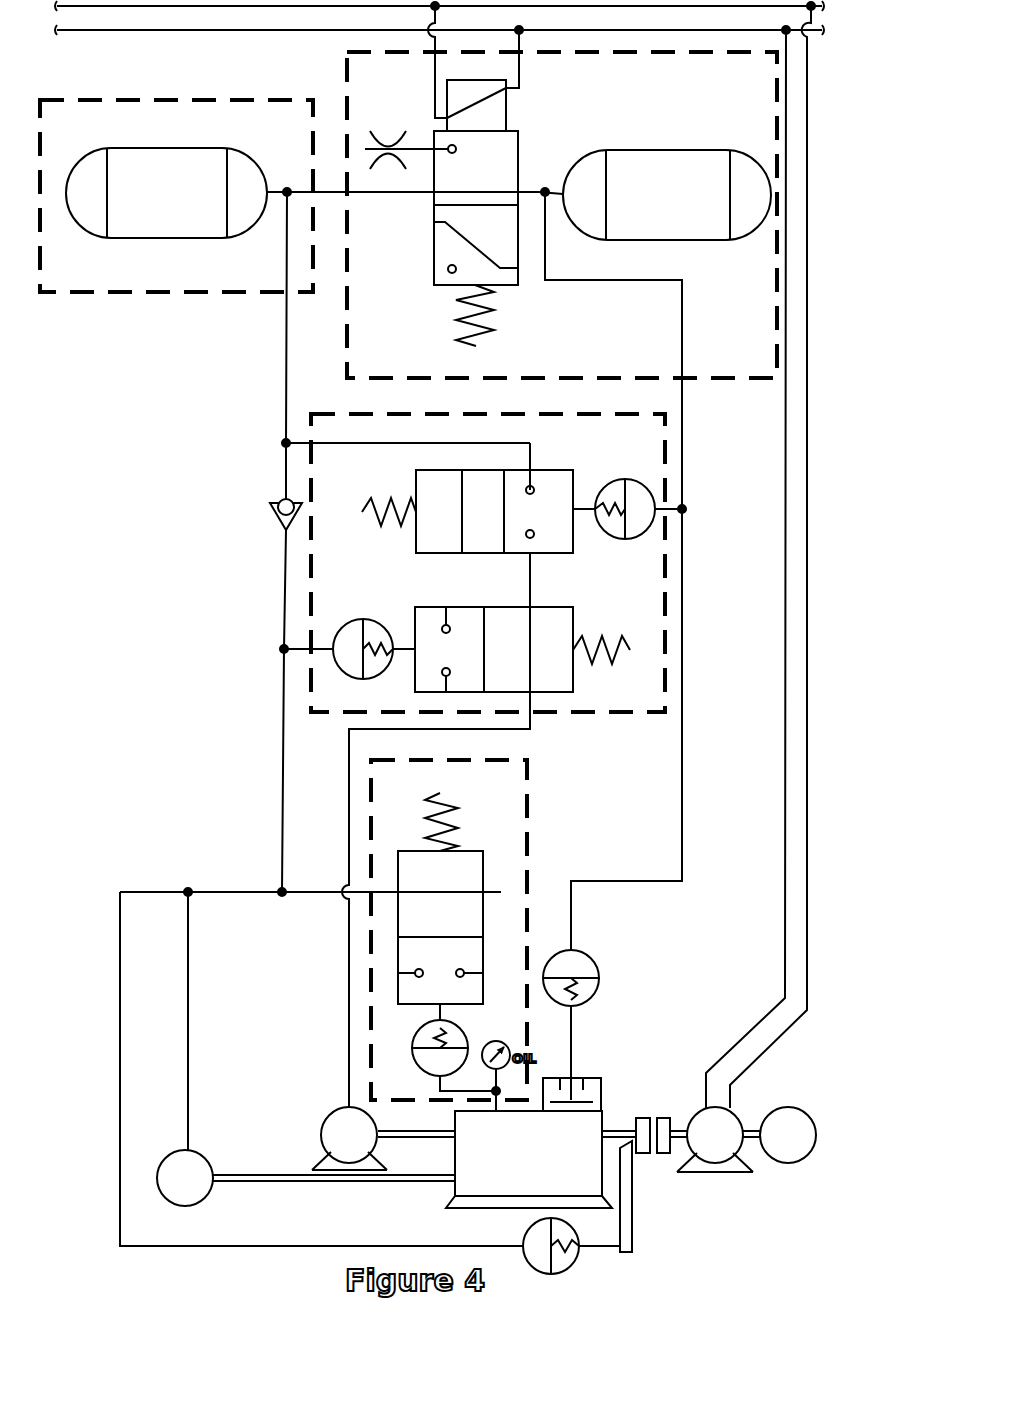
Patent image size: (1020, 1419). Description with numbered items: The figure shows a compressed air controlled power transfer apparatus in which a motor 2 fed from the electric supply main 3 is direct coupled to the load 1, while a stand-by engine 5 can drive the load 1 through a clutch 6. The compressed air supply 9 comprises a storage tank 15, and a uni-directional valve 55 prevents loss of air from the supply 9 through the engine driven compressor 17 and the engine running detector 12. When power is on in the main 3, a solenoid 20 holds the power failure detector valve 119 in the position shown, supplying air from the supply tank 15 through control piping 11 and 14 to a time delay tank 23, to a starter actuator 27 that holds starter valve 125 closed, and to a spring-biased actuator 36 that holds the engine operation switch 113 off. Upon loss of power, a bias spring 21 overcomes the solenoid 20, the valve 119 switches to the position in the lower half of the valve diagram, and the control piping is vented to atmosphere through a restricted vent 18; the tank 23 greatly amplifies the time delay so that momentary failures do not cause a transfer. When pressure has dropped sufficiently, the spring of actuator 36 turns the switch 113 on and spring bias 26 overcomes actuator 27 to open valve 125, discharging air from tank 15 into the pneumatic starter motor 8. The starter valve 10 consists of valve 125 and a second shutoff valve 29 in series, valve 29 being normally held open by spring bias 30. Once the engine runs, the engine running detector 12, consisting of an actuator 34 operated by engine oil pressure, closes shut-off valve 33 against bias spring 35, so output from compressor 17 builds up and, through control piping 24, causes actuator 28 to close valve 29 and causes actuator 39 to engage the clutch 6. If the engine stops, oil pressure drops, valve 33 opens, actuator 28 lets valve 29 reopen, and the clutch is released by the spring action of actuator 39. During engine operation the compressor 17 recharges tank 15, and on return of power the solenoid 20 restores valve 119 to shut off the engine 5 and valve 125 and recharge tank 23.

The load 1 is at (795, 1109).
The motor 2 is at (735, 1112).
The electric supply main 3 is at (648, 6).
The stand-by engine 5 is at (452, 1193).
The clutch 6 is at (650, 1117).
The pneumatic starter motor 8 is at (328, 1111).
The compressed air supply 9 is at (178, 100).
The starter valve 10 is at (512, 413).
The control piping 11 is at (667, 519).
The engine running detector 12 is at (530, 764).
The control piping 14 is at (686, 478).
The storage tank 15 is at (172, 148).
The engine driven compressor 17 is at (208, 1194).
The restricted vent 18 is at (386, 137).
The solenoid 20 is at (508, 108).
The bias spring 21 is at (458, 312).
The time delay tank 23 is at (655, 151).
The control piping 24 is at (320, 645).
The spring bias 26 is at (385, 498).
The actuator 27 is at (620, 480).
The actuator 28 is at (376, 678).
The shutoff valve 29 is at (556, 607).
The spring bias 30 is at (600, 637).
The shut-off valve 33 is at (484, 978).
The actuator 34 is at (413, 1046).
The bias spring 35 is at (460, 808).
The spring-biased actuator 36 is at (600, 970).
The actuator 39 is at (524, 1238).
The uni-directional valve 55 is at (272, 512).
The engine operation switch 113 is at (588, 1077).
The power failure detector valve 119 is at (522, 144).
The shutoff valve 125 is at (547, 470).